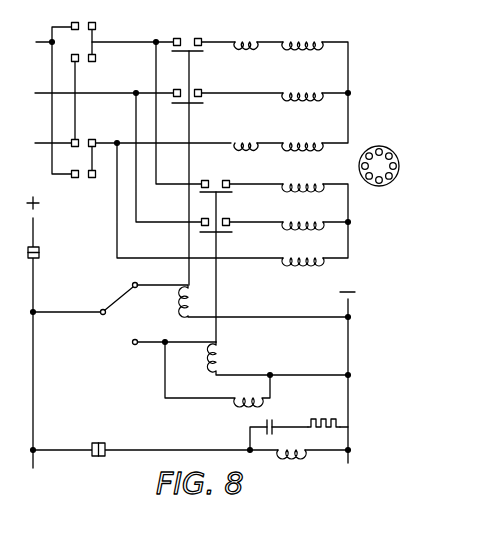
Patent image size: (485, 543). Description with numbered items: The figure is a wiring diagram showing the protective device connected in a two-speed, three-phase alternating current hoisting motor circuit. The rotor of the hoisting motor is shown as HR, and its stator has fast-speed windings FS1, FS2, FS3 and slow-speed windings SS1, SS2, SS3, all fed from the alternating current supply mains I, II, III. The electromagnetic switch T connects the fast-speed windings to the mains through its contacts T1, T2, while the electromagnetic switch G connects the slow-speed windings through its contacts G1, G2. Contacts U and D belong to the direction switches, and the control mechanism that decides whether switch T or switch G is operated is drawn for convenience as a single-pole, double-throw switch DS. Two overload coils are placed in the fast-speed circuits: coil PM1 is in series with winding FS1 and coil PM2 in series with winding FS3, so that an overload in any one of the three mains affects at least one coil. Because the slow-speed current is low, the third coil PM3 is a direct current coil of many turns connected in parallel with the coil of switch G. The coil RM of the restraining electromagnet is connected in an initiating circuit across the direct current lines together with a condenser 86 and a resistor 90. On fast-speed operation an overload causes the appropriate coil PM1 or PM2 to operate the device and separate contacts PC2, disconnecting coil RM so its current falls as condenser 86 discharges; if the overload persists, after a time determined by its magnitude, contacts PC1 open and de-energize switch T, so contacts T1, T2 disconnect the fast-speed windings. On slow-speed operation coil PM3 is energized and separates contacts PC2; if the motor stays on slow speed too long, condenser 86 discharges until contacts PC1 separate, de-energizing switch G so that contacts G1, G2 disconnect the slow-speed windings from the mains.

The alternating current supply main I is at (36, 43).
The alternating current supply main II is at (96, 94).
The alternating current supply main III is at (120, 144).
The direction switch contacts U is at (83, 22).
The direction switch contacts D is at (85, 55).
The contact of fast-speed switch T1 is at (188, 44).
The contact of fast-speed switch T2 is at (192, 92).
The overload coil PM1 is at (240, 43).
The overload coil PM2 is at (244, 144).
The direct current coil PM3 is at (236, 397).
The fast-speed winding FS1 is at (297, 43).
The fast-speed winding FS2 is at (300, 94).
The fast-speed winding FS3 is at (300, 144).
The contact of slow-speed switch G1 is at (214, 187).
The contact of slow-speed switch G2 is at (222, 223).
The slow-speed winding SS1 is at (300, 185).
The slow-speed winding SS2 is at (300, 223).
The slow-speed winding SS3 is at (300, 259).
The hoisting motor rotor HR is at (385, 180).
The protective device contacts PC1 is at (40, 252).
The protective device contacts PC2 is at (98, 442).
The single-pole double-throw switch DS is at (121, 299).
The fast-speed electromagnetic switch T is at (193, 290).
The slow-speed electromagnetic switch G is at (223, 355).
The restraining electromagnet coil RM is at (288, 449).
The condenser 86 is at (274, 424).
The resistor 90 is at (322, 422).